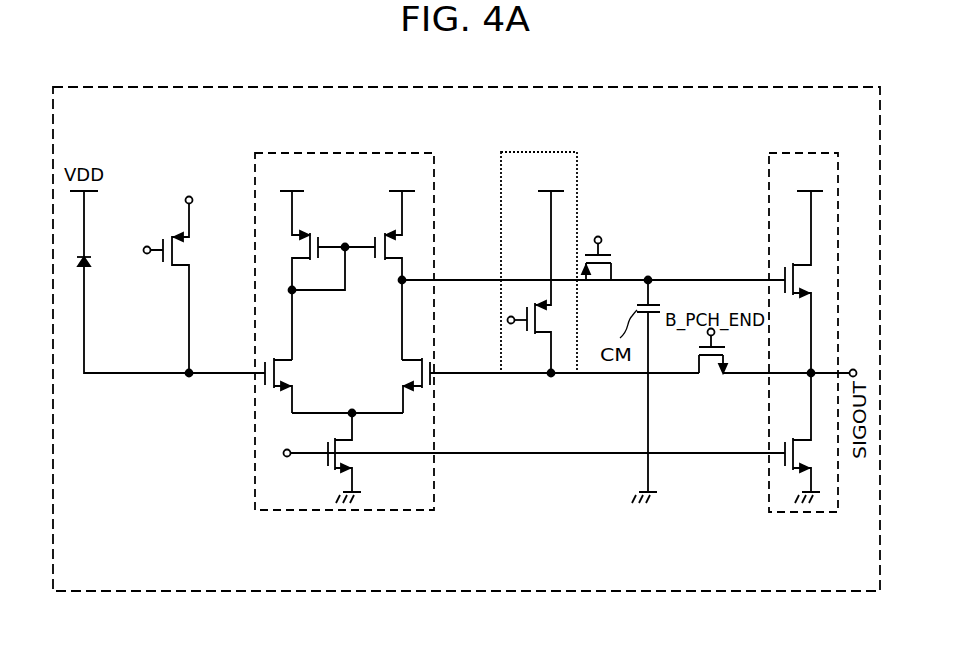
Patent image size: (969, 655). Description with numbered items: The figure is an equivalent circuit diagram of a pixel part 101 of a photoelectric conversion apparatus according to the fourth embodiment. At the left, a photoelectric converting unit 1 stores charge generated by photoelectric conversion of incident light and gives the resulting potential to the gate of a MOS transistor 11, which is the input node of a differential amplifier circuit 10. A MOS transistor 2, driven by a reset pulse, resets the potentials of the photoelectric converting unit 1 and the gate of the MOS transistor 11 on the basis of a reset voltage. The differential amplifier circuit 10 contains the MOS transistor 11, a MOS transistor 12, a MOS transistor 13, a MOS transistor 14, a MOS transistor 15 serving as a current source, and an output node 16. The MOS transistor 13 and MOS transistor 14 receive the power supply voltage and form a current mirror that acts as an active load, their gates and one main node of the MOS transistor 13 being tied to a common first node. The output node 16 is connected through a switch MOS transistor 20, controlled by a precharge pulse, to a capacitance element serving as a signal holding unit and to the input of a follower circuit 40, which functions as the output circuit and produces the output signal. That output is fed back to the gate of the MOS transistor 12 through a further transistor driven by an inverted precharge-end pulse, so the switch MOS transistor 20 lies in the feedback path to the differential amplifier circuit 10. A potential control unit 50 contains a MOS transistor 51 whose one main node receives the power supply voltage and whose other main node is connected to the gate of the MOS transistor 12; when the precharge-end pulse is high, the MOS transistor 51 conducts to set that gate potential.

The photoelectric converting unit 1 is at (91, 260).
The MOS transistor 2 is at (192, 248).
The differential amplifier circuit 10 is at (345, 153).
The MOS transistor 11 is at (260, 391).
The MOS transistor 12 is at (400, 373).
The MOS transistor 13 is at (312, 235).
The MOS transistor 14 is at (381, 234).
The MOS transistor for a current source 15 is at (329, 470).
The output node 16 is at (405, 278).
The switch MOS transistor 20 is at (612, 258).
The follower circuit 40 is at (806, 153).
The potential control unit 50 is at (545, 152).
The MOS transistor 51 is at (528, 303).
The pixel part 101 is at (178, 591).